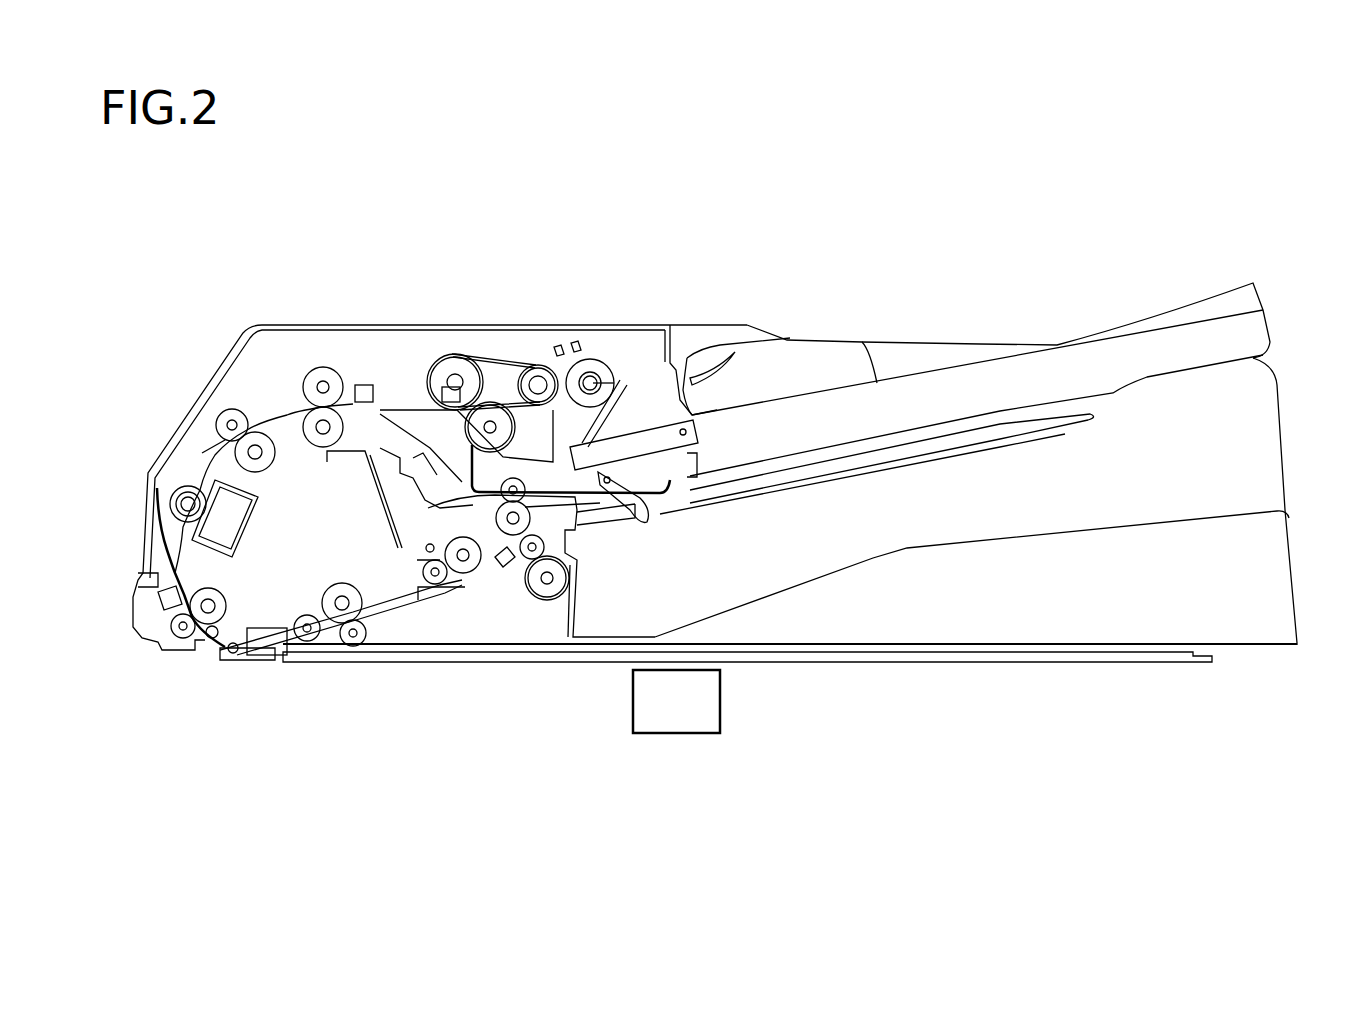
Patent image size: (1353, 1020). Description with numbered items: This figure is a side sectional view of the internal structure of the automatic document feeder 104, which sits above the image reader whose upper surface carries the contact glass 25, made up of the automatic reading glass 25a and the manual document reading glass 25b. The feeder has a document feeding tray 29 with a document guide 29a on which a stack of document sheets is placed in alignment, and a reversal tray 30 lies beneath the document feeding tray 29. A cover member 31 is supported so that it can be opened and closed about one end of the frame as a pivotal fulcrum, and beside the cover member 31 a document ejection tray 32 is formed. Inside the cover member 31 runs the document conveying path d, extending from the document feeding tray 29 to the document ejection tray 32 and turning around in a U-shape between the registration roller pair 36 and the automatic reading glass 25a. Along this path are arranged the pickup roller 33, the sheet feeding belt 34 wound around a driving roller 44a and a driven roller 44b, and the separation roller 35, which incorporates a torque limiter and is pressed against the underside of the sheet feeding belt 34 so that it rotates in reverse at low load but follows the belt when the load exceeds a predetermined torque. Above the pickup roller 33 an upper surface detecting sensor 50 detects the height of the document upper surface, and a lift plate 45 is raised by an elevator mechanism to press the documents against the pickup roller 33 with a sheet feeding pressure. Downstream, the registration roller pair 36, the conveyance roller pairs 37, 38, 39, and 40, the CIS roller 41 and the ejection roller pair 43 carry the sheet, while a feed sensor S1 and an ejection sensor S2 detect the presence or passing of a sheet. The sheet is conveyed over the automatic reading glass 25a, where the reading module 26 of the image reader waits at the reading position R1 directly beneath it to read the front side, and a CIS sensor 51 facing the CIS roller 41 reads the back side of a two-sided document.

The automatic document feeder 104 is at (418, 245).
The cover member 31 is at (247, 333).
The registration roller pair 36 is at (315, 370).
The driving roller 44a is at (450, 380).
The sheet feeding belt 34 is at (460, 360).
The separation roller 35 is at (494, 420).
The driven roller 44b is at (536, 368).
The upper surface detecting sensor 50 is at (578, 345).
The pickup roller 33 is at (610, 365).
The lift plate 45 is at (663, 430).
The document guide 29a is at (832, 348).
The document feeding tray 29 is at (1087, 337).
The conveyance roller pair 37 is at (228, 418).
The document conveying path d is at (288, 415).
The feed sensor S1 is at (363, 385).
The CIS roller 41 is at (185, 493).
The CIS sensor 51 is at (183, 533).
The conveyance roller pair 39 is at (323, 603).
The ejection sensor S2 is at (505, 562).
The reversal tray 30 is at (1015, 440).
The document ejection tray 32 is at (873, 560).
The conveyance roller pair 38 is at (182, 635).
The reading position R1 is at (253, 664).
The automatic reading glass 25a is at (235, 664).
The manual document reading glass 25b is at (397, 665).
The contact glass 25 is at (361, 748).
The conveyance roller pair 40 is at (455, 567).
The ejection roller pair 43 is at (545, 590).
The reading module 26 is at (678, 733).